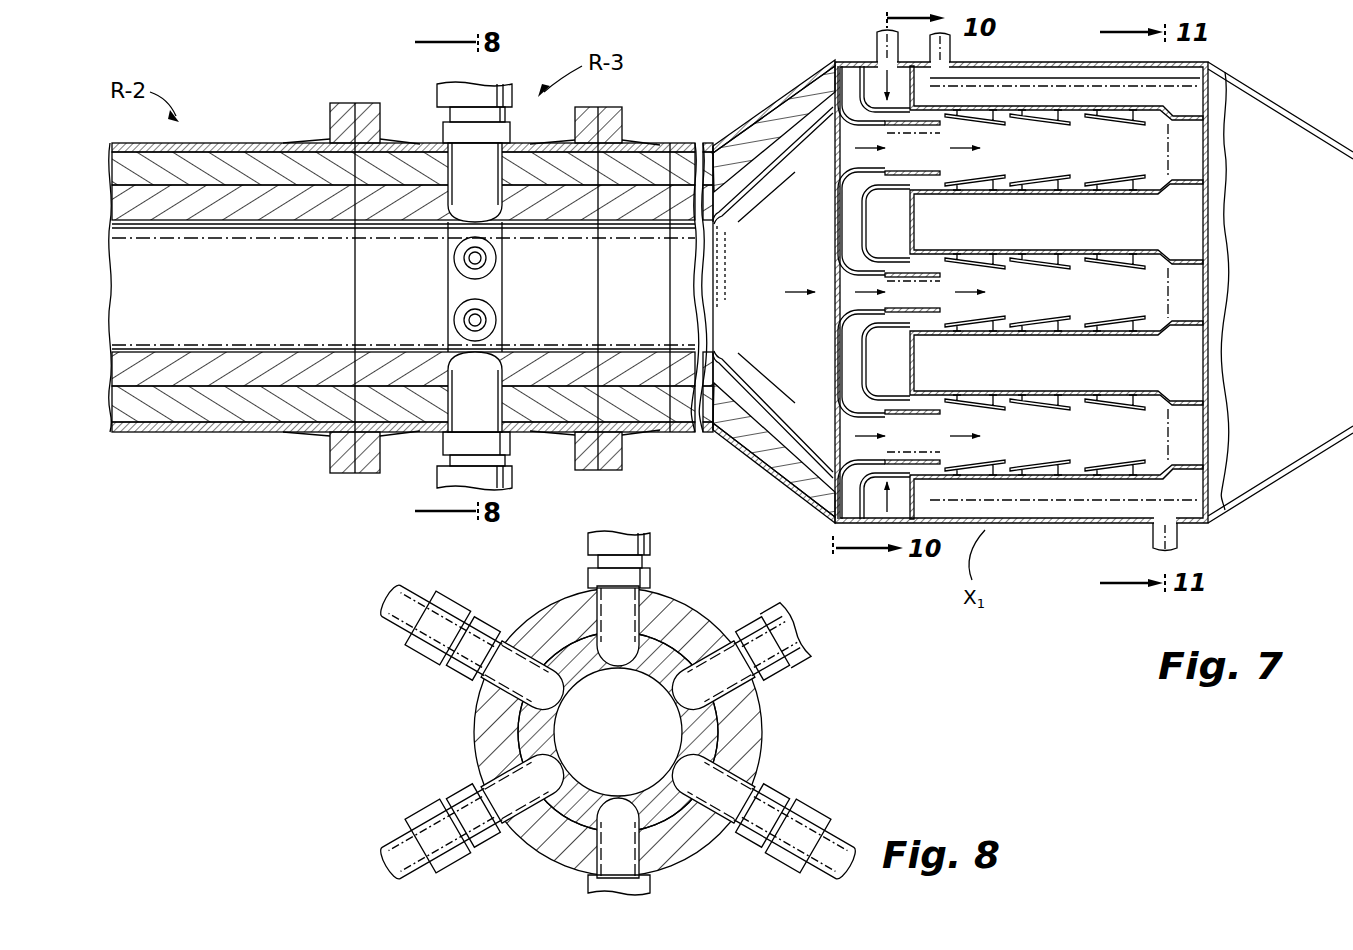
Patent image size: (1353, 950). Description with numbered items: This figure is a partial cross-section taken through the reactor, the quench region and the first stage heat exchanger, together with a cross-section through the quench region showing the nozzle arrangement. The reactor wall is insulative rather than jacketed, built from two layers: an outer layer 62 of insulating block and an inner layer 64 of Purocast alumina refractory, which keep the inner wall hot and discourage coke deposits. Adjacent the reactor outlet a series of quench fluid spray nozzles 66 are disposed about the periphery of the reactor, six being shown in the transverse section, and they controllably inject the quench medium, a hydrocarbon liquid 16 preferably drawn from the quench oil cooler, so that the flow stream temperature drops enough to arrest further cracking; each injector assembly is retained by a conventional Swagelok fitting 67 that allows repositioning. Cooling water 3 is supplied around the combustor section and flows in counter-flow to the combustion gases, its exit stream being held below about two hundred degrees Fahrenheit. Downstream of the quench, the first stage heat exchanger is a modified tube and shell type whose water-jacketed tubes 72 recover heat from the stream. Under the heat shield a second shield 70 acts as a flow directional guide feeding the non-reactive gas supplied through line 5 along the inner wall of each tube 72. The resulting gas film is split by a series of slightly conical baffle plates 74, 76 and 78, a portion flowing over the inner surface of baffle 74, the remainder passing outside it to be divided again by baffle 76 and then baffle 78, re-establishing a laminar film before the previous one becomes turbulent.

In FIG. 7, the outer layer 62 is at (235, 156).
In FIG. 8, the outer layer 62 is at (705, 625).
In FIG. 7, the inner layer 64 is at (650, 224).
In FIG. 8, the inner layer 64 is at (712, 730).
In FIG. 7, the quench fluid spray nozzles 66 is at (505, 215).
In FIG. 8, the quench fluid spray nozzles 66 is at (536, 652).
In FIG. 8, the Swagelok fitting 67 is at (597, 561).
In FIG. 7, the hydrocarbon liquid 16 is at (440, 84).
In FIG. 7, the second shield 70 is at (856, 86).
In FIG. 7, the water-jacketed tube 72 is at (1045, 106).
In FIG. 7, the baffle plate 74 is at (987, 118).
In FIG. 7, the baffle plate 76 is at (1045, 120).
In FIG. 7, the baffle plate 78 is at (1130, 120).
In FIG. 7, the non-reactive gas supply line 5 is at (872, 40).
In FIG. 7, the cooling water 3 is at (948, 42).